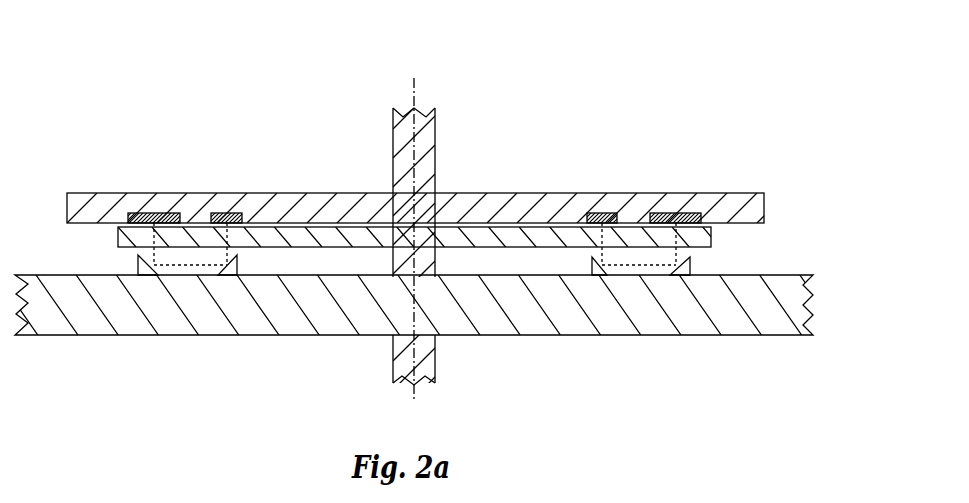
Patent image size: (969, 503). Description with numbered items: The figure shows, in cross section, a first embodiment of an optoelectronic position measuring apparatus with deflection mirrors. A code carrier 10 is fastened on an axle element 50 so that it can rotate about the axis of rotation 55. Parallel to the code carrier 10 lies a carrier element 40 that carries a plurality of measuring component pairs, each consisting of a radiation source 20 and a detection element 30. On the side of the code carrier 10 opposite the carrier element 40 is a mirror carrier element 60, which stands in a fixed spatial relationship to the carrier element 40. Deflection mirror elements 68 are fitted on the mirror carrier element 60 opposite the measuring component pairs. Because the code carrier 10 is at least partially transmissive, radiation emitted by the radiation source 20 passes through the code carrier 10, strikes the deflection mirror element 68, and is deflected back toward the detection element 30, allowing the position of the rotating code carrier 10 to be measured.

The code carrier 10 is at (568, 237).
The radiation source 20 is at (227, 213).
The detection element 30 is at (152, 213).
The carrier element 40 is at (512, 193).
The axle element 50 is at (430, 132).
The axis of rotation 55 is at (415, 100).
The mirror carrier element 60 is at (374, 312).
The deflection mirror element 68 is at (235, 264).